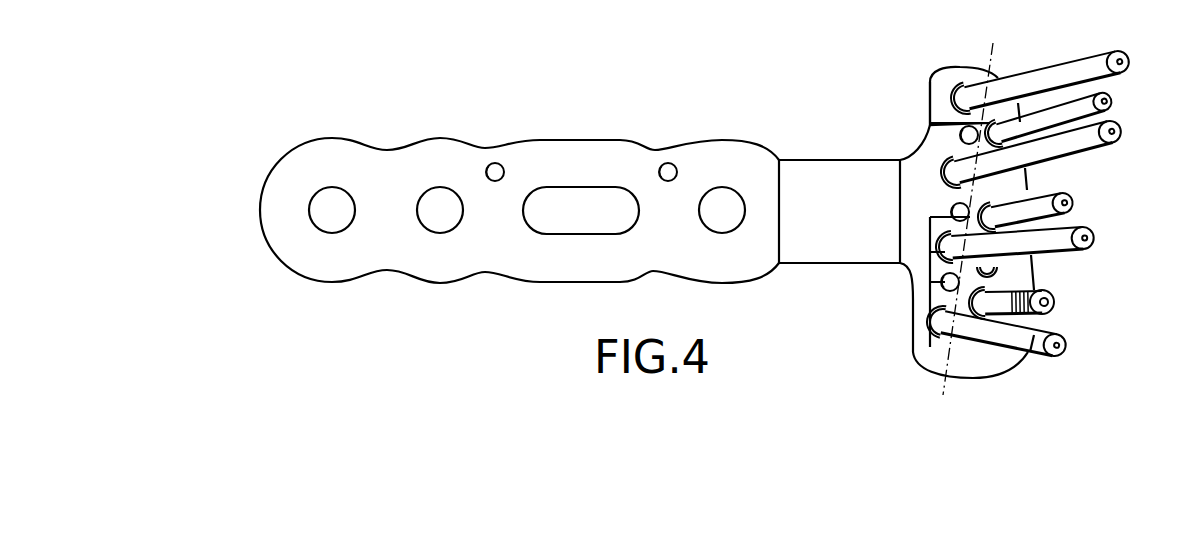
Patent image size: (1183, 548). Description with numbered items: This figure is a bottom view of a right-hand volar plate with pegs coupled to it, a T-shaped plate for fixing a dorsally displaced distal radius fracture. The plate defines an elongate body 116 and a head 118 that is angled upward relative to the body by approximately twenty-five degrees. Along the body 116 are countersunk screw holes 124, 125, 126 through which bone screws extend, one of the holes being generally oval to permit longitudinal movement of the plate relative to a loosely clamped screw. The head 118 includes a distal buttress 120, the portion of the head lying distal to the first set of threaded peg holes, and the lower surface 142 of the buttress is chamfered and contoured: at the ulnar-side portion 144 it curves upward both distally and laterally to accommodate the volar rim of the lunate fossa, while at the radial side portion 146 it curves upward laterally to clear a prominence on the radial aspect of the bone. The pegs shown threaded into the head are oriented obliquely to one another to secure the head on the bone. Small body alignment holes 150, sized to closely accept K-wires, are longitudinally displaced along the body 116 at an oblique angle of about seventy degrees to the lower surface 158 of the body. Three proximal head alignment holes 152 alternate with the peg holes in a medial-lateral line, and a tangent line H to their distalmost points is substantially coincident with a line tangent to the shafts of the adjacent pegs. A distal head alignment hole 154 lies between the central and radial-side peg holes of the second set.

The elongate body 116 is at (566, 138).
The head 118 is at (947, 137).
The distal buttress 120 is at (1033, 178).
The screw hole 124 is at (327, 205).
The screw hole 125 is at (433, 205).
The screw hole 126 is at (725, 203).
The lower surface of the buttress 142 is at (1023, 268).
The ulnar-side portion 144 is at (961, 72).
The radial side portion 146 is at (998, 364).
The body alignment holes 150 is at (494, 166).
The proximal head alignment holes 152 is at (943, 278).
The distal head alignment hole 154 is at (990, 270).
The lower surface of the body portion 158 is at (522, 260).
The tangent line H is at (947, 381).